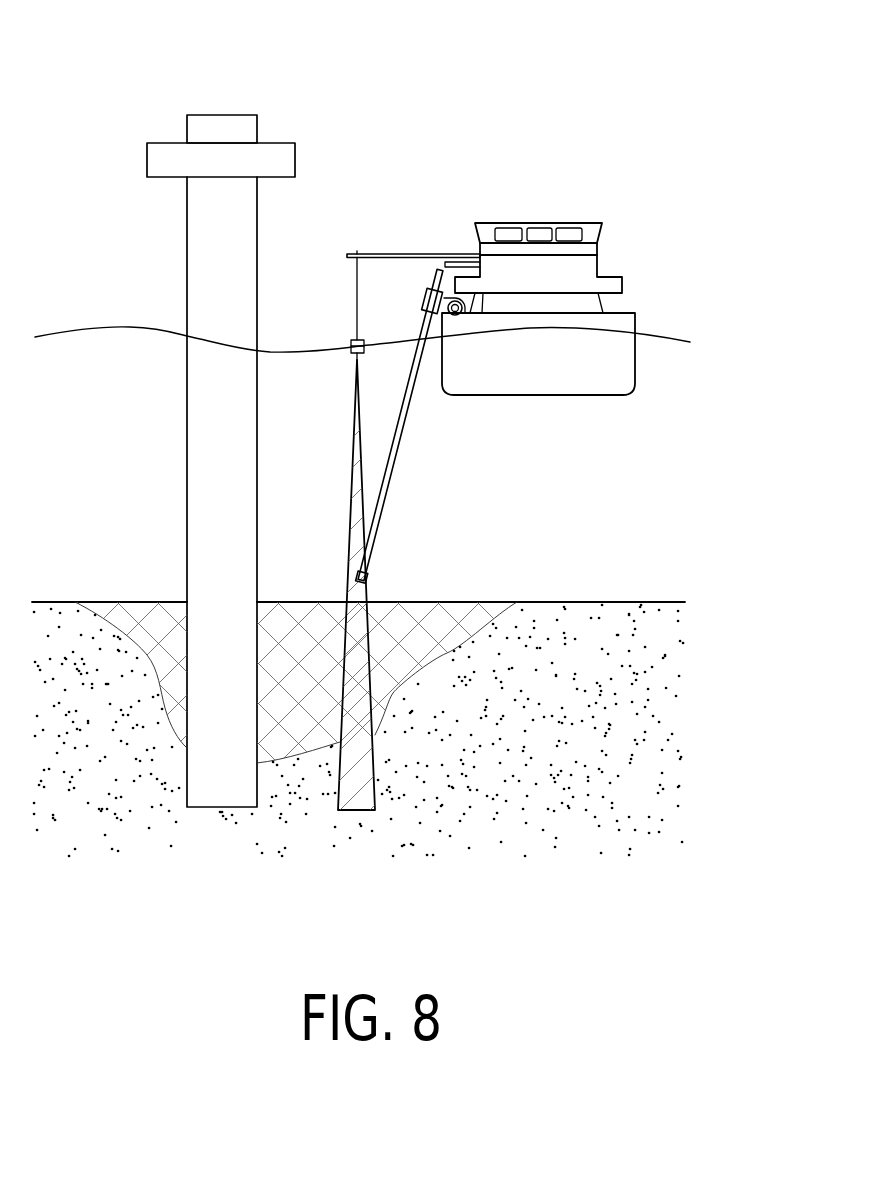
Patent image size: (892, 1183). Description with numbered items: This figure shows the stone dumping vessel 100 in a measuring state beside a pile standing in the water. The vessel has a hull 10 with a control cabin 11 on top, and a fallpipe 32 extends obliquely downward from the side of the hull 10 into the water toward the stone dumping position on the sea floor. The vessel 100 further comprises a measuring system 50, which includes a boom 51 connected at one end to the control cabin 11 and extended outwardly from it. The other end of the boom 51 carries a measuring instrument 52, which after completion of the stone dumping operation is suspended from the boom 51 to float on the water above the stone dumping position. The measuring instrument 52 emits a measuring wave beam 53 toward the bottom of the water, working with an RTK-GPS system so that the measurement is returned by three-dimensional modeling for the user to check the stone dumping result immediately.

The stone dumping vessel 100 is at (668, 133).
The hull 10 is at (639, 327).
The control cabin 11 is at (580, 272).
The fallpipe 32 is at (385, 489).
The measuring system 50 is at (378, 252).
The boom 51 is at (413, 257).
The measuring instrument 52 is at (351, 343).
The measuring wave beam 53 is at (358, 790).